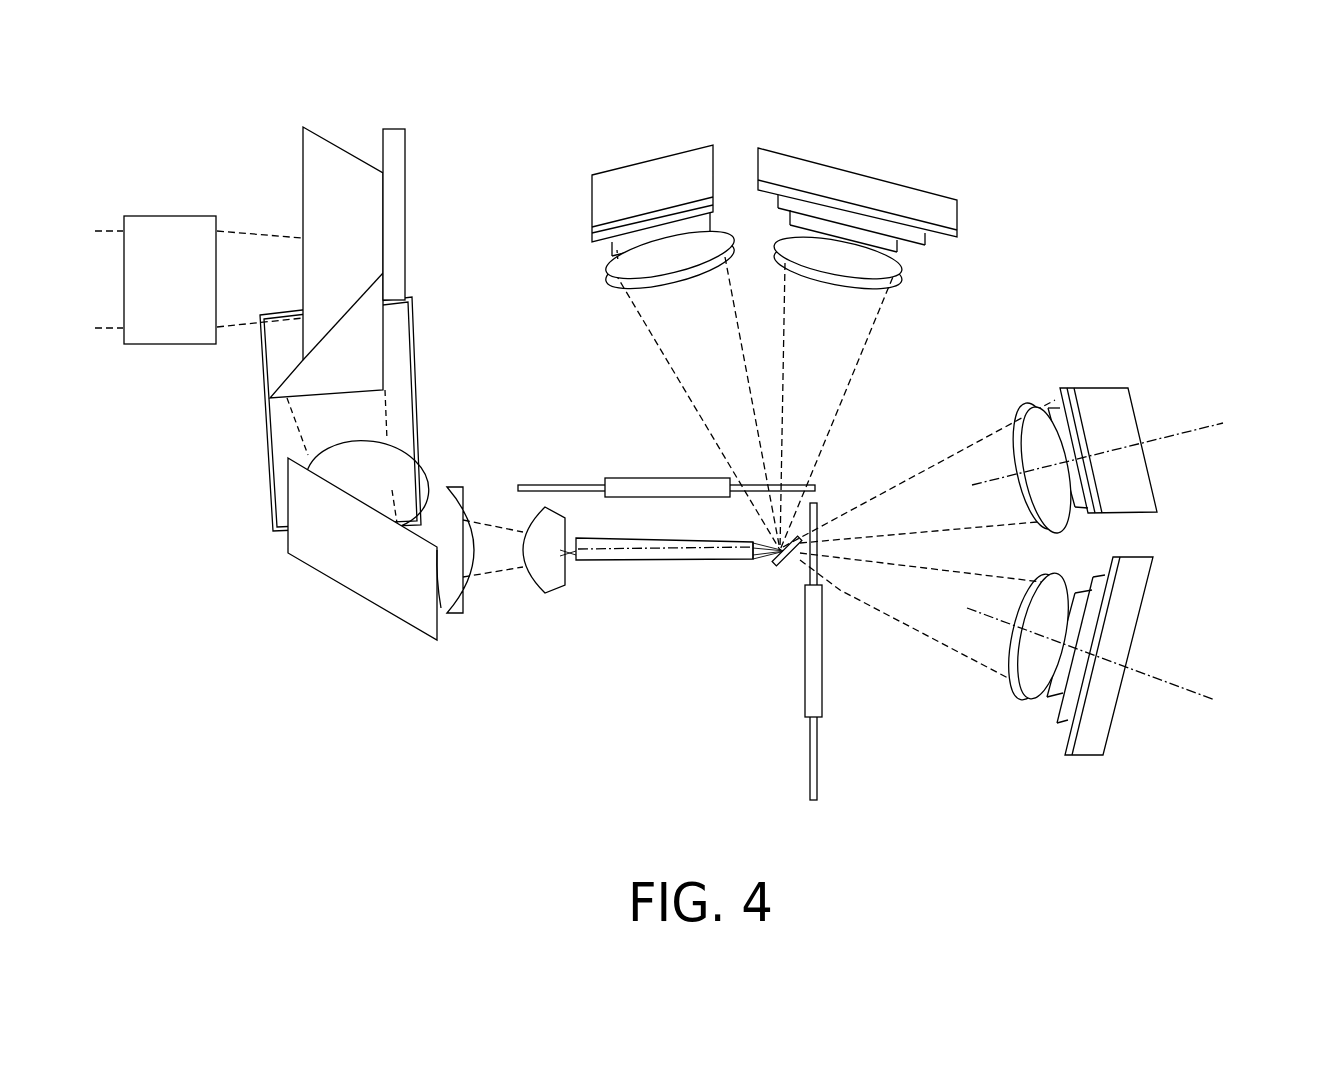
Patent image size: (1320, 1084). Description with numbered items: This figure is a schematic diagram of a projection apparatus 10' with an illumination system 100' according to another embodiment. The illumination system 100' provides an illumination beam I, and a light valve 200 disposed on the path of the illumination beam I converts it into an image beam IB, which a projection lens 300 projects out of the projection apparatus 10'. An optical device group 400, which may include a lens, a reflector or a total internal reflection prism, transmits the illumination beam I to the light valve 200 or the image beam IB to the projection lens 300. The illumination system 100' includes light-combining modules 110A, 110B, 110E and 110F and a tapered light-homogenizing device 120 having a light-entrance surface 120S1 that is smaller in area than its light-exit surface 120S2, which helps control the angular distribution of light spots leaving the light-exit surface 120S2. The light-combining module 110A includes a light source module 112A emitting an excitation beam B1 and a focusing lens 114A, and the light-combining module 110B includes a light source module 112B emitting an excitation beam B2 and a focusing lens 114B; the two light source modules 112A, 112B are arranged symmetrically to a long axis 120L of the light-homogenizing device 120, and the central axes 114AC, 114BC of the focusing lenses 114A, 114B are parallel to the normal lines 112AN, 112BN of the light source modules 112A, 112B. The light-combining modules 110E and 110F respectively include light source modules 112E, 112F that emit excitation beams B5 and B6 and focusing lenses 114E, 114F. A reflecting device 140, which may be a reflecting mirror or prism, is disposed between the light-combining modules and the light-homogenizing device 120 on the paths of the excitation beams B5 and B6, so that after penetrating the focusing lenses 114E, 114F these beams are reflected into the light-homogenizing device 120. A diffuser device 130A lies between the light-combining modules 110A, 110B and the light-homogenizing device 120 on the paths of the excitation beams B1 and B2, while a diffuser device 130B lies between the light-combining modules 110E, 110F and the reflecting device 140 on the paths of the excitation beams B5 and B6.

The illumination system 100' is at (1201, 104).
The projection apparatus 10' is at (1290, 817).
The projection lens 300 is at (172, 242).
The image beam IB is at (260, 235).
The light valve 200 is at (395, 143).
The optical device group 400 is at (351, 377).
The illumination beam I is at (498, 575).
The diffuser device 130B is at (562, 485).
The diffuser device 130A is at (812, 770).
The light-homogenizing device 120 is at (654, 608).
The light-exit surface 120S2 is at (563, 553).
The light-entrance surface 120S1 is at (762, 560).
The long axis 120L is at (707, 561).
The reflecting device 140 is at (782, 566).
The excitation beam B1 is at (885, 485).
The excitation beam B2 is at (883, 618).
The excitation beam B5 is at (657, 340).
The excitation beam B6 is at (862, 340).
The light-combining module 110E is at (590, 221).
The light source module 112E is at (607, 208).
The focusing lens 114E is at (633, 273).
The light-combining module 110F is at (943, 222).
The light source module 112F is at (942, 212).
The focusing lens 114F is at (877, 273).
The light-combining module 110A is at (1101, 406).
The light source module 112A is at (1100, 407).
The focusing lens 114A is at (1028, 433).
The normal line 112AN is at (1132, 447).
The central axis 114AC is at (997, 477).
The light-combining module 110B is at (1100, 711).
The light source module 112B is at (1093, 740).
The focusing lens 114B is at (1022, 697).
The normal line 112BN is at (1128, 663).
The central axis 114BC is at (982, 612).